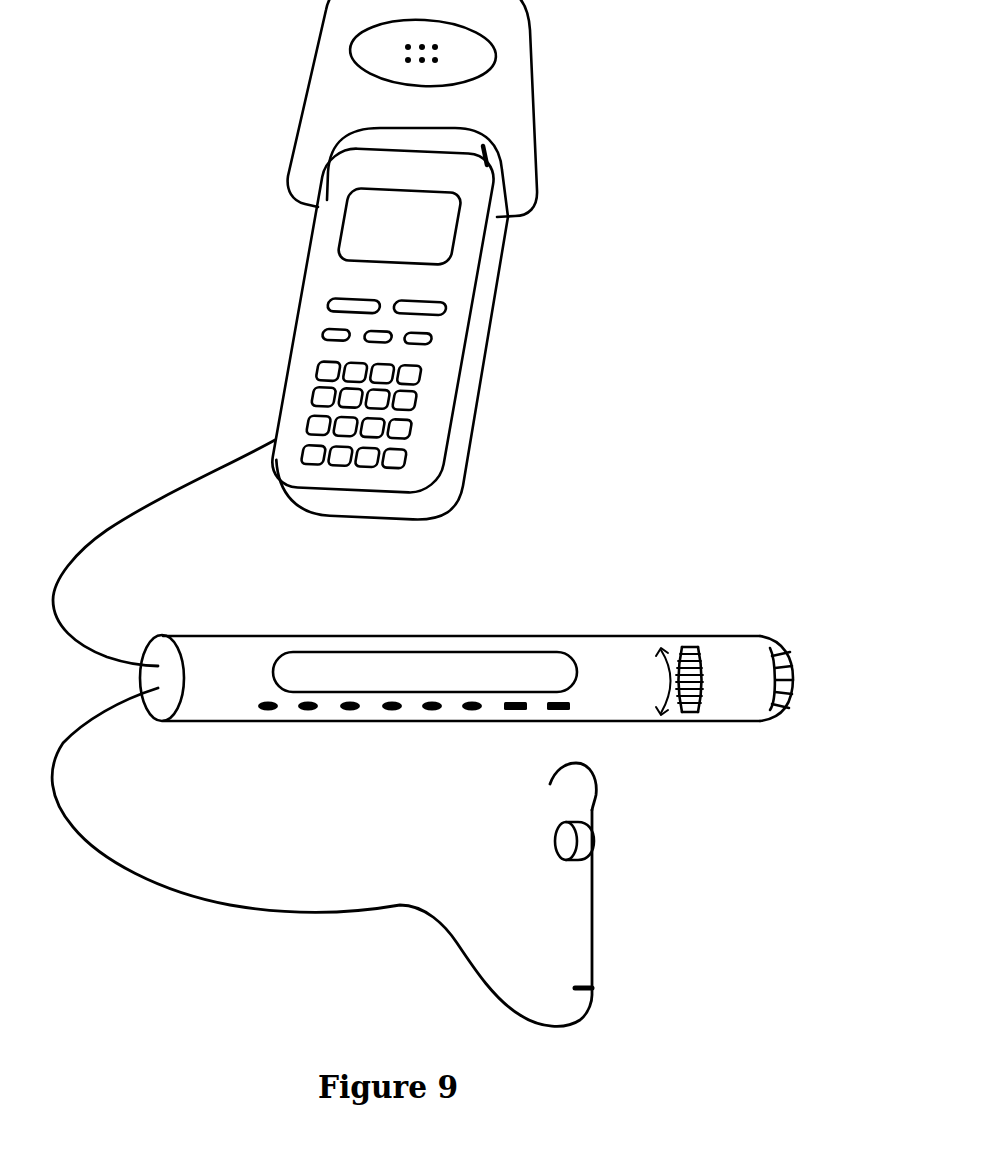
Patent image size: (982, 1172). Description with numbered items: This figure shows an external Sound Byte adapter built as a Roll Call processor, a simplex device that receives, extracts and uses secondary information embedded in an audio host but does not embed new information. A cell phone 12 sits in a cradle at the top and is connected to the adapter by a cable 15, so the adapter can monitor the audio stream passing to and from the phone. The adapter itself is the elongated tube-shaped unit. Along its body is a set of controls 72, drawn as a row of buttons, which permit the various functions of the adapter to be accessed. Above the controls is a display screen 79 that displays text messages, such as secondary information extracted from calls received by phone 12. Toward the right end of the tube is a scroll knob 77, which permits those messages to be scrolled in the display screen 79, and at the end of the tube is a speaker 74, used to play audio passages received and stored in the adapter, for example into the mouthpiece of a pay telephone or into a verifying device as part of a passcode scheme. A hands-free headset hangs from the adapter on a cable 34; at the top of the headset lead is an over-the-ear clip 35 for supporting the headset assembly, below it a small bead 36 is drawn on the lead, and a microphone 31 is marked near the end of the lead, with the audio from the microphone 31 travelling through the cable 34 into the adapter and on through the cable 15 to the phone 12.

The cell phone 12 is at (487, 318).
The cable 15 is at (130, 518).
The cable 34 is at (155, 882).
The set of controls 72 is at (567, 735).
The display screen 79 is at (507, 670).
The scroll knob 77 is at (700, 657).
The speaker 74 is at (775, 713).
The over-the-ear clip 35 is at (605, 767).
The bead 36 is at (605, 822).
The microphone 31 is at (605, 970).